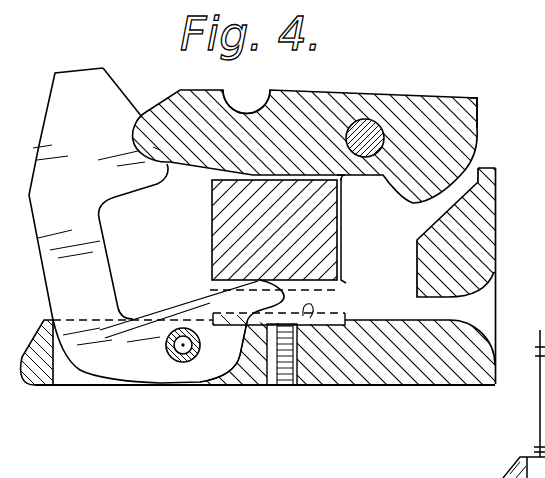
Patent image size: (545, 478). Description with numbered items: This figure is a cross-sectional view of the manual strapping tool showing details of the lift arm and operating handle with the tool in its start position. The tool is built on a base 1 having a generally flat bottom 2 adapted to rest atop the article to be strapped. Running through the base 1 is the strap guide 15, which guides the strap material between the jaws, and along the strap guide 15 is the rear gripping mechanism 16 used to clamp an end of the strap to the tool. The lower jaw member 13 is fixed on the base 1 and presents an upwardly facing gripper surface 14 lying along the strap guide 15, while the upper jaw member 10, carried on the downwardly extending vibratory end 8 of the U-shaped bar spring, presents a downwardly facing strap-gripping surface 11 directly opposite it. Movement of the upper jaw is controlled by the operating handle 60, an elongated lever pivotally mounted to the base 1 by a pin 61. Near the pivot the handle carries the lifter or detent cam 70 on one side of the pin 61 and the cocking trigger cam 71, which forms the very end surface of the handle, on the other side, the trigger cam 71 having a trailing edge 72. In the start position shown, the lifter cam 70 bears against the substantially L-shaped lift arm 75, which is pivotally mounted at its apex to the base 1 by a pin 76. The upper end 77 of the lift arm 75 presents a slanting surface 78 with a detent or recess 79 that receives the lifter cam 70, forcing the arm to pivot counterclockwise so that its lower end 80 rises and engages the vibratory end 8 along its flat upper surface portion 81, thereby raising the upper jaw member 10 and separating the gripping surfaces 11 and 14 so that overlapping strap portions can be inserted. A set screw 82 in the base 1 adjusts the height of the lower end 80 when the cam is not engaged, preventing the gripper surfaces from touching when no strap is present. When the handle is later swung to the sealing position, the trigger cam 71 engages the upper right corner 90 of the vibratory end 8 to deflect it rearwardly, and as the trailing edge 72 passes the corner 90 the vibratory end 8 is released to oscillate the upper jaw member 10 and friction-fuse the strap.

The base 1 is at (473, 397).
The bottom 2 is at (428, 387).
The vibratory end 8 is at (223, 196).
The upper jaw member 10 is at (353, 263).
The strap-gripping surface 11 is at (356, 262).
The lower jaw member 13 is at (348, 335).
The gripper surface 14 is at (306, 362).
The strap guide 15 is at (468, 307).
The rear gripping mechanism 16 is at (533, 12).
The operating handle 60 is at (298, 113).
The pin 61 is at (363, 130).
The lifter or detent cam 70 is at (138, 115).
The cocking trigger cam 71 is at (478, 128).
The trailing edge 72 is at (478, 99).
The lift arm 75 is at (88, 226).
The pin 76 is at (177, 357).
The upper end 77 is at (65, 89).
The slanting surface 78 is at (121, 81).
The detent or recess 79 is at (153, 147).
The lower end 80 is at (203, 300).
The flat upper surface portion 81 is at (205, 348).
The set screw 82 is at (262, 365).
The upper right corner 90 is at (345, 176).